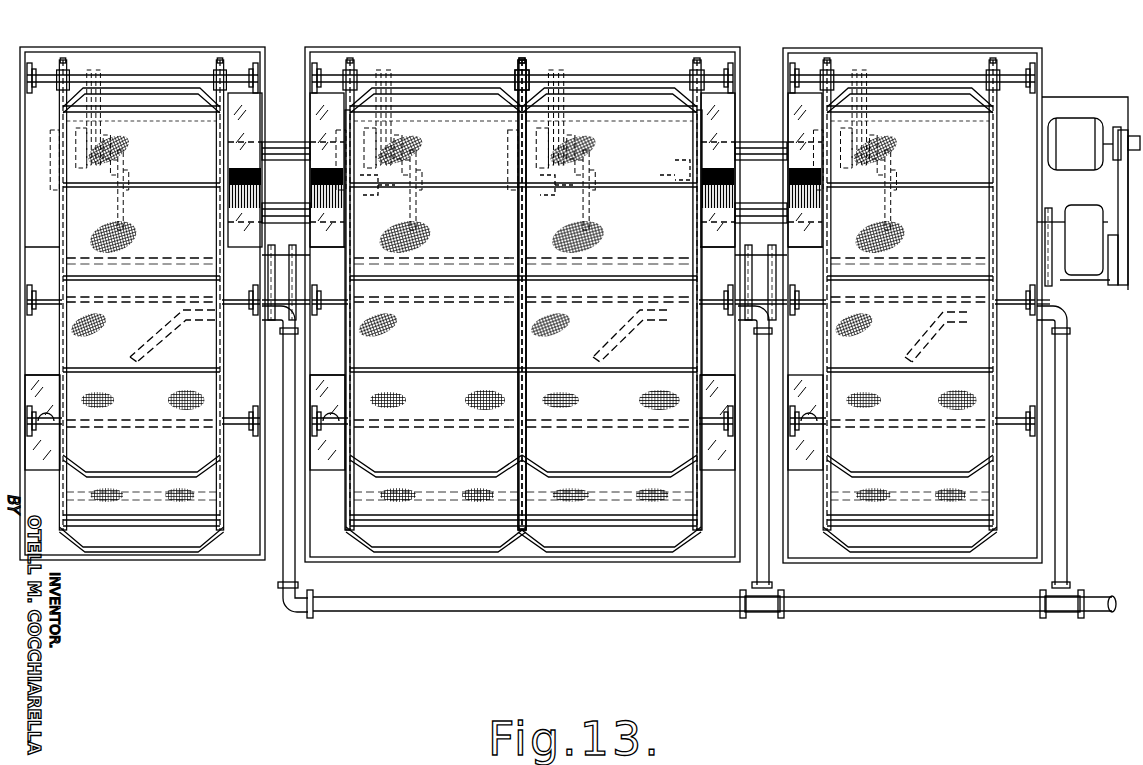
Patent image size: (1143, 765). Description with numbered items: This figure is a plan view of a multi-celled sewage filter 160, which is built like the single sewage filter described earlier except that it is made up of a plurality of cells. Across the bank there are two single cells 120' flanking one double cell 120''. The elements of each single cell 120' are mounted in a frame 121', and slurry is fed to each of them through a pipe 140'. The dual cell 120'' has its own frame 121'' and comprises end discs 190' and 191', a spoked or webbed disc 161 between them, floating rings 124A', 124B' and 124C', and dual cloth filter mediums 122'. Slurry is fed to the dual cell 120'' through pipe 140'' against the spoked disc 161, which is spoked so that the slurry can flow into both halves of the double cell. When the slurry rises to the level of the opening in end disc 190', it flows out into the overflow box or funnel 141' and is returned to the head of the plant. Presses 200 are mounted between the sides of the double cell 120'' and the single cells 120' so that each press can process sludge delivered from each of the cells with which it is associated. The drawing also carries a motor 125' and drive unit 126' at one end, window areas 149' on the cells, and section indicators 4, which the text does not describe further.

The single cell 120' is at (530, 351).
The double cell 120'' is at (525, 353).
The frame 121' is at (531, 288).
The frame 121'' is at (522, 318).
The dual cloth filter mediums 122' is at (520, 305).
The floating ring 124A' is at (384, 212).
The floating ring 124B' is at (664, 208).
The floating ring 124C' is at (558, 202).
The motor 125' is at (1091, 158).
The gear reducer 126' is at (1089, 267).
The pipe 140' is at (690, 462).
The pipe 140'' is at (786, 447).
The overflow box or funnel 141' is at (522, 404).
The window 149' is at (525, 155).
The multi-celled sewage filter 160 is at (436, 626).
The spoked or webbed disc 161 is at (530, 500).
The end disc 190' is at (336, 329).
The end disc 191' is at (711, 329).
The press 200 is at (345, 195).
The section line 4- 4 is at (300, 432).